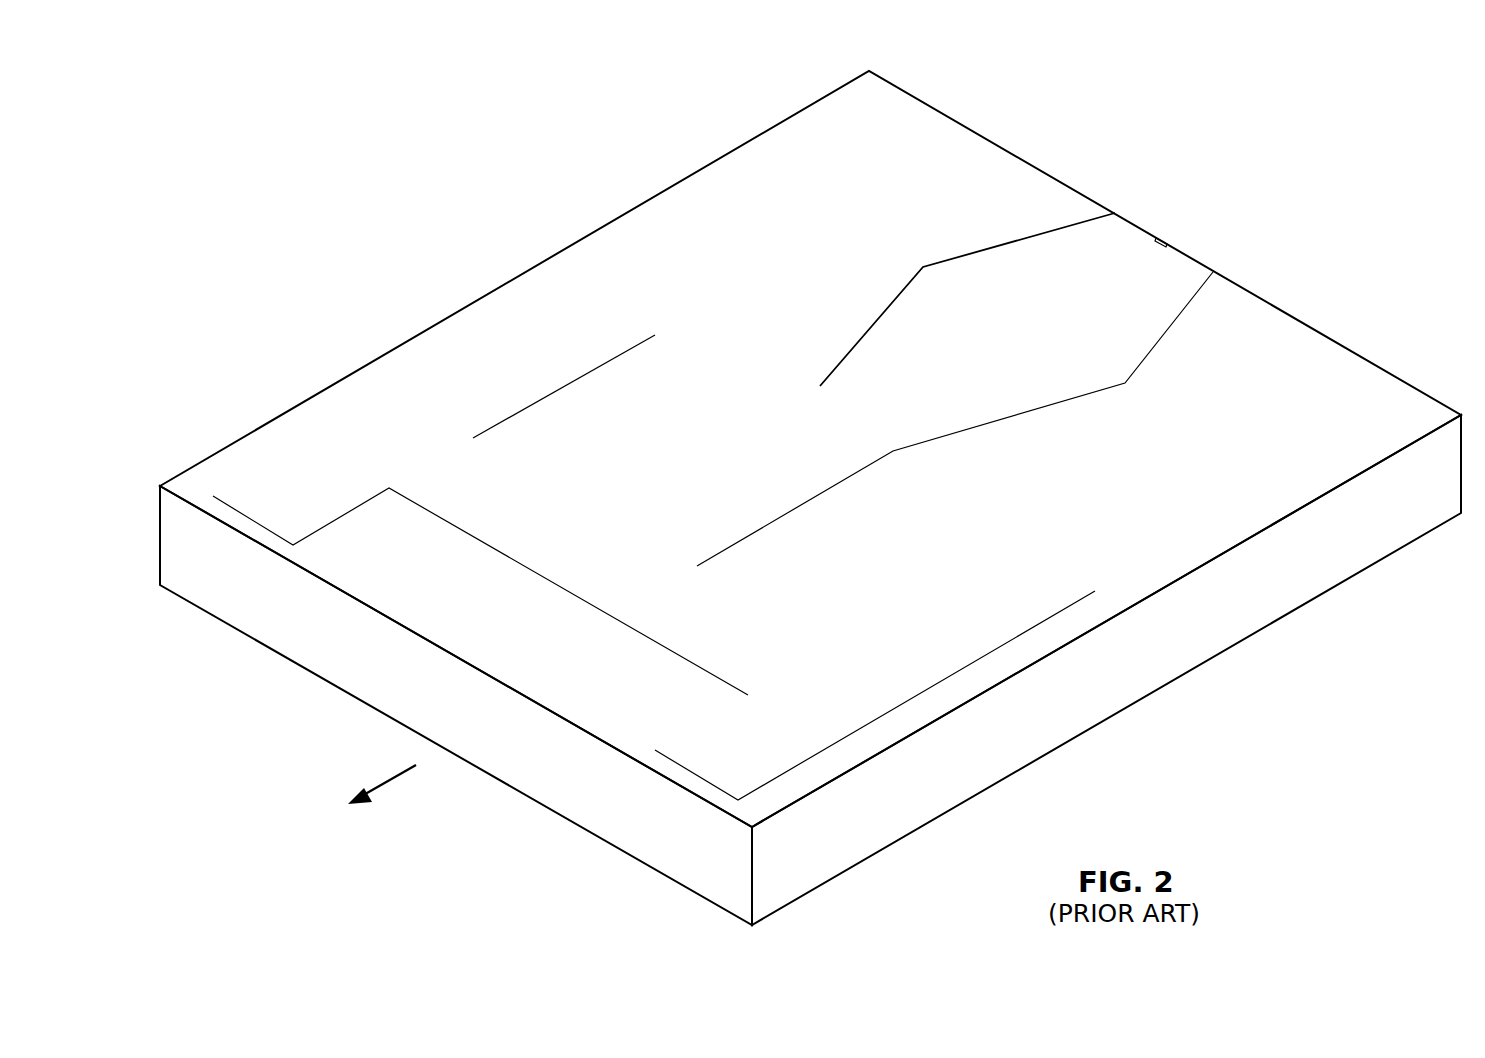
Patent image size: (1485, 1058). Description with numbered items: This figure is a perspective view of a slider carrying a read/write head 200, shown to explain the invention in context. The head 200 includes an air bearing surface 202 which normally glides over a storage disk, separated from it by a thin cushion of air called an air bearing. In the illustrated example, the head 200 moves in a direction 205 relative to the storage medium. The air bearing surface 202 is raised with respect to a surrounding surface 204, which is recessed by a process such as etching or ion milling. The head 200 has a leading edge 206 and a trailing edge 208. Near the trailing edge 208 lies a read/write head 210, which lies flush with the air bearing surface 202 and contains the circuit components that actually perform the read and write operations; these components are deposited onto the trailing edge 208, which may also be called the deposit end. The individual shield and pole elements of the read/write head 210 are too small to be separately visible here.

The read/write head 200 is at (810, 498).
The air bearing surface 202 is at (388, 412).
The surrounding surface 204 is at (655, 227).
The direction 205 is at (398, 774).
The leading edge 206 is at (590, 812).
The trailing edge 208 is at (1303, 320).
The read/write head 210 is at (1180, 228).